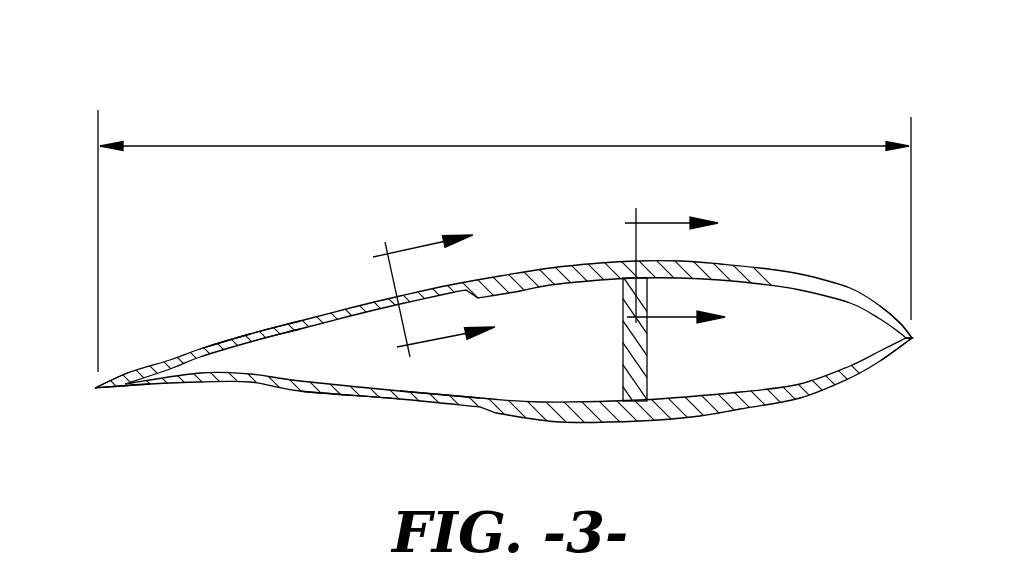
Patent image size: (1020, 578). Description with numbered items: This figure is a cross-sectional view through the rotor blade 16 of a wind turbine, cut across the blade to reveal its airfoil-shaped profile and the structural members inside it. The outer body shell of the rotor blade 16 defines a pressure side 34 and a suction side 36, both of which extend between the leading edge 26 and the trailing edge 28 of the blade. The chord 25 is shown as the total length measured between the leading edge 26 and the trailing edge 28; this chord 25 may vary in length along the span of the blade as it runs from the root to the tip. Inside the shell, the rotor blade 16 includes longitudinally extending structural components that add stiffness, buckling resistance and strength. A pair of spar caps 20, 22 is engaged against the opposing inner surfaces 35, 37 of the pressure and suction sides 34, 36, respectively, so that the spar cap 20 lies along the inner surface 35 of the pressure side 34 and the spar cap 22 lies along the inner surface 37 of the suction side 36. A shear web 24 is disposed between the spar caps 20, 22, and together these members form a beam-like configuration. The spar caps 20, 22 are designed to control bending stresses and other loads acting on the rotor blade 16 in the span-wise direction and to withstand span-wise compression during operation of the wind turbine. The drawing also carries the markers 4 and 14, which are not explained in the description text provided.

The airflow 4 is at (690, 270).
The inlet airflow 14 is at (460, 284).
The rotor blade 16 is at (483, 251).
The spar cap 20 is at (755, 277).
The spar cap 22 is at (683, 408).
The shear web 24 is at (635, 365).
The chord 25 is at (497, 146).
The leading edge 26 is at (913, 343).
The trailing edge 28 is at (93, 389).
The pressure side 34 is at (372, 402).
The inner surface 35 is at (412, 397).
The suction side 36 is at (287, 328).
The inner surface 37 is at (315, 336).